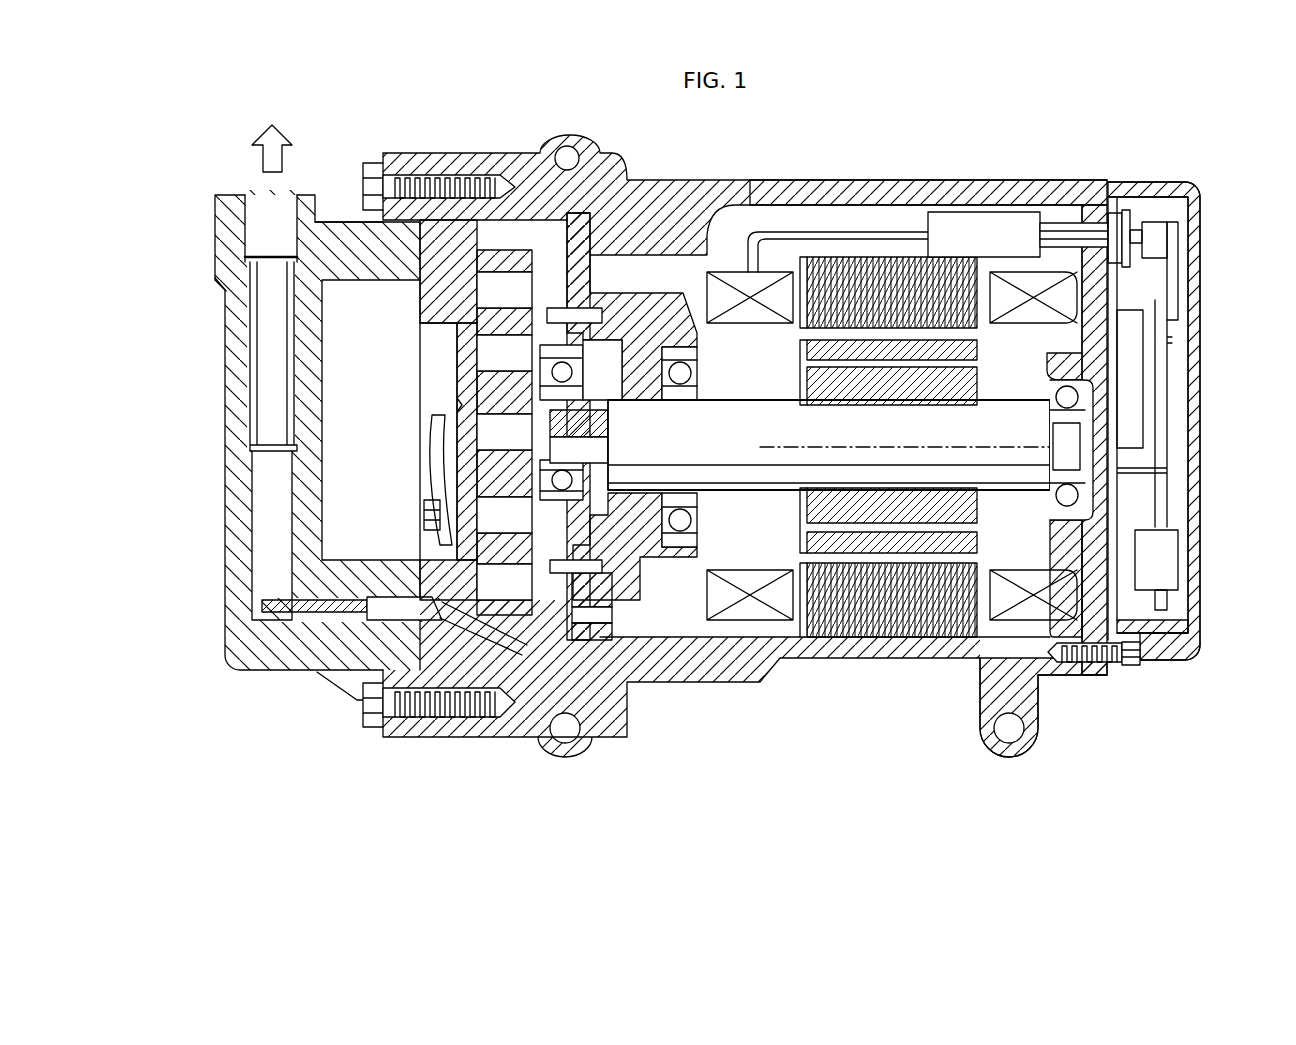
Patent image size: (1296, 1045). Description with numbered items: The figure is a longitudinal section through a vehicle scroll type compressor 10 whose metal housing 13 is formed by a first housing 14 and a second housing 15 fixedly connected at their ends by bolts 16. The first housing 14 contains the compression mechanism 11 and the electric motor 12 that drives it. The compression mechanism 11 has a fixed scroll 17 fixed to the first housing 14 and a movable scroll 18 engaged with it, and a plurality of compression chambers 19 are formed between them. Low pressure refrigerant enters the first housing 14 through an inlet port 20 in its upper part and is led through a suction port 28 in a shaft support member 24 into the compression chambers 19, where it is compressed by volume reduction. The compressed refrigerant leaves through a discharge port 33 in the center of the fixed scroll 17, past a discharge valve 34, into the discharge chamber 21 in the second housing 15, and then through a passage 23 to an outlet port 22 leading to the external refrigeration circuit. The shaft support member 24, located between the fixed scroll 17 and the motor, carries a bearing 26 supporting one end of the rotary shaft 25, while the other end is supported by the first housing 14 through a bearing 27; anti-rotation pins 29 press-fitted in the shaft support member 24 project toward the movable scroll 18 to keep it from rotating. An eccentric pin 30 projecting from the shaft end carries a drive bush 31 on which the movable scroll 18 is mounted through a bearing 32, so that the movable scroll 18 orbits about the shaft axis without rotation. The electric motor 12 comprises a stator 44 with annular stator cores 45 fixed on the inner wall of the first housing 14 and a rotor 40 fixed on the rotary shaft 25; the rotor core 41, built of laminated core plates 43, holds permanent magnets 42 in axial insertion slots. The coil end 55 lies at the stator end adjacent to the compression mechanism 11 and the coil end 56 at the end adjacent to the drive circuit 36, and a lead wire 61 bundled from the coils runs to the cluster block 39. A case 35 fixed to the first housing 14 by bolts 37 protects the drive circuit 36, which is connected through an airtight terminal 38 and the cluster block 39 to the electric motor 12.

The scroll type compressor 10 is at (721, 448).
The compression mechanism 11 is at (433, 366).
The electric motor 12 is at (852, 466).
The housing 13 is at (631, 469).
The first housing 14 is at (477, 740).
The second housing 15 is at (341, 488).
The bolts 16 is at (380, 163).
The fixed scroll 17 is at (385, 255).
The movable scroll 18 is at (515, 235).
The compression chambers 19 is at (517, 303).
The inlet port 20 is at (1065, 262).
The discharge chamber 21 is at (354, 316).
The outlet port 22 is at (275, 200).
The passage 23 is at (226, 292).
The shaft support member 24 is at (645, 578).
The rotary shaft 25 is at (879, 448).
The bearing 26 is at (700, 505).
The bearing 27 is at (1050, 508).
The suction port 28 is at (632, 640).
The anti-rotation pins 29 is at (602, 293).
The eccentric pin 30 is at (583, 420).
The drive bush 31 is at (605, 330).
The bearing 32 is at (608, 457).
The discharge port 33 is at (462, 405).
The discharge valve 34 is at (438, 445).
The case 35 is at (1202, 492).
The drive circuit 36 is at (1182, 430).
The bolts 37 is at (1102, 677).
The airtight terminal 38 is at (1122, 205).
The cluster block 39 is at (1012, 213).
The rotor 40 is at (901, 445).
The rotor core 41 is at (805, 378).
The permanent magnets 42 is at (980, 366).
The laminated core plates 43 is at (976, 392).
The stator 44 is at (795, 630).
The stator cores 45 is at (883, 640).
The coil end 55 is at (752, 326).
The coil end 56 is at (1010, 270).
The lead wire 61 is at (748, 265).